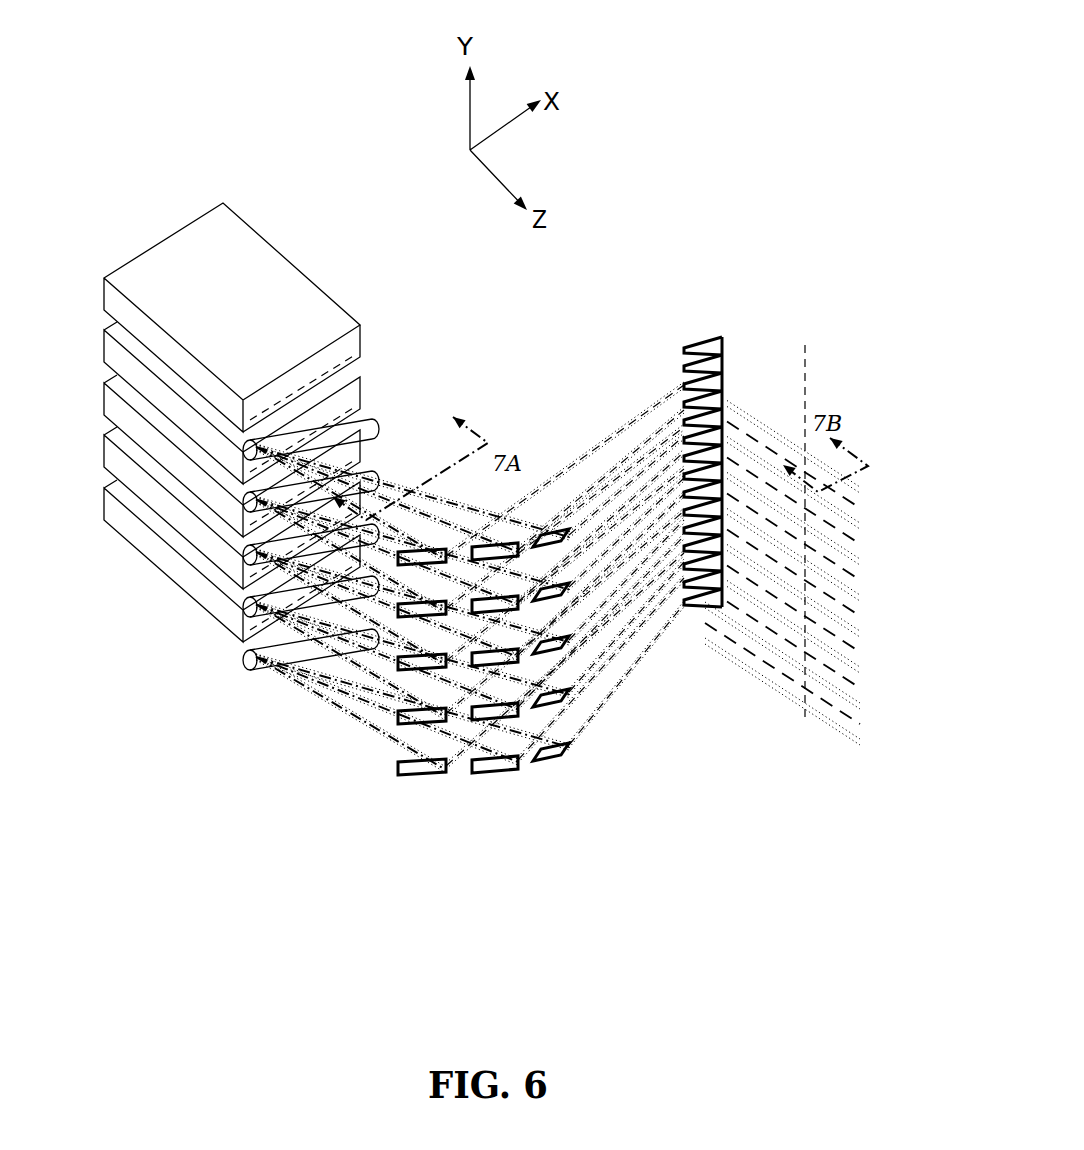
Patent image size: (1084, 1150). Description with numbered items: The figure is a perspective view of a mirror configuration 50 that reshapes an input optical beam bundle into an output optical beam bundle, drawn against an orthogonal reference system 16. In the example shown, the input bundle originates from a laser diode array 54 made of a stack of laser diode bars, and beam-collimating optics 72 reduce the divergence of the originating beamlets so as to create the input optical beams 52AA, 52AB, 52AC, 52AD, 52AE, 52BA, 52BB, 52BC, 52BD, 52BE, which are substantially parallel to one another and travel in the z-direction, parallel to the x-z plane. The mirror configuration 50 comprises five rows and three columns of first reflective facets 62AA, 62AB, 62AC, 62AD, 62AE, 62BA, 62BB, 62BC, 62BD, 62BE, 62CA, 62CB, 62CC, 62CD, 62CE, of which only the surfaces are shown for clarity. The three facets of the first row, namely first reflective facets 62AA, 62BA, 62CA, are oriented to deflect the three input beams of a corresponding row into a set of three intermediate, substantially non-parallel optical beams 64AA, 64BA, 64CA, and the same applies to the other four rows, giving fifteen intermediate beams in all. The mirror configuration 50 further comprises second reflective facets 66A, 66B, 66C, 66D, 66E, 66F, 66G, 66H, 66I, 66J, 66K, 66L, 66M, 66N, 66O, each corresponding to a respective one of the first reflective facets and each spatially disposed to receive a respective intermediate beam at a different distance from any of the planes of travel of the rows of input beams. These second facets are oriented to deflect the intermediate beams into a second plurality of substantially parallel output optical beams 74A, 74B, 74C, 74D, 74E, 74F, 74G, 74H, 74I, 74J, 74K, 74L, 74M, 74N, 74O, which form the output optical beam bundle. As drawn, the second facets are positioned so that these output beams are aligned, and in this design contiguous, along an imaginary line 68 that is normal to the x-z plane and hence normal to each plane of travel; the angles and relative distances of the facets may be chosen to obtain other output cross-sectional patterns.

The orthogonal reference system 16 is at (537, 41).
The mirror configuration 50 is at (810, 908).
The input optical beam 52AA is at (282, 645).
The input optical beam 52AB is at (340, 482).
The input optical beam 52AC is at (343, 428).
The input optical beam 52AD is at (343, 375).
The input optical beam 52AE is at (343, 318).
The input optical beam 52BA is at (361, 524).
The input optical beam 52BB is at (354, 508).
The input optical beam 52BC is at (347, 492).
The input optical beam 52BD is at (340, 475).
The input optical beam 52BE is at (333, 455).
The laser diode array 54 is at (100, 270).
The first reflective facet 62AA is at (418, 770).
The first reflective facet 62AB is at (418, 719).
The first reflective facet 62AC is at (418, 665).
The first reflective facet 62AD is at (418, 612).
The first reflective facet 62AE is at (418, 560).
The first reflective facet 62BA is at (493, 767).
The first reflective facet 62BB is at (493, 714).
The first reflective facet 62BC is at (493, 660).
The first reflective facet 62BD is at (493, 607).
The first reflective facet 62BE is at (493, 554).
The first reflective facet 62CA is at (558, 756).
The first reflective facet 62CB is at (558, 702).
The first reflective facet 62CC is at (558, 649).
The first reflective facet 62CD is at (558, 596).
The first reflective facet 62CE is at (558, 542).
The intermediate optical beam 64AA is at (548, 475).
The intermediate optical beam 64BA is at (576, 478).
The intermediate optical beam 64CA is at (597, 483).
The second reflective facet 66A is at (727, 352).
The second reflective facet 66B is at (727, 368).
The second reflective facet 66C is at (727, 384).
The second reflective facet 66D is at (727, 400).
The second reflective facet 66E is at (727, 416).
The second reflective facet 66F is at (727, 432).
The second reflective facet 66G is at (727, 448).
The second reflective facet 66H is at (727, 464).
The second reflective facet 66I is at (727, 480).
The second reflective facet 66J is at (727, 500).
The second reflective facet 66K is at (727, 517).
The second reflective facet 66L is at (727, 534).
The second reflective facet 66M is at (727, 551).
The second reflective facet 66N is at (727, 568).
The second reflective facet 66O is at (727, 585).
The imaginary line 68 is at (817, 368).
The beam-collimating optics 72 is at (246, 661).
The output optical beam 74A is at (862, 490).
The output optical beam 74B is at (862, 508).
The output optical beam 74C is at (862, 526).
The output optical beam 74D is at (862, 544).
The output optical beam 74E is at (862, 562).
The output optical beam 74F is at (862, 580).
The output optical beam 74G is at (862, 598).
The output optical beam 74H is at (862, 616).
The output optical beam 74I is at (862, 634).
The output optical beam 74J is at (862, 652).
The output optical beam 74K is at (862, 670).
The output optical beam 74L is at (862, 688).
The output optical beam 74M is at (862, 706).
The output optical beam 74N is at (862, 724).
The output optical beam 74O is at (862, 742).